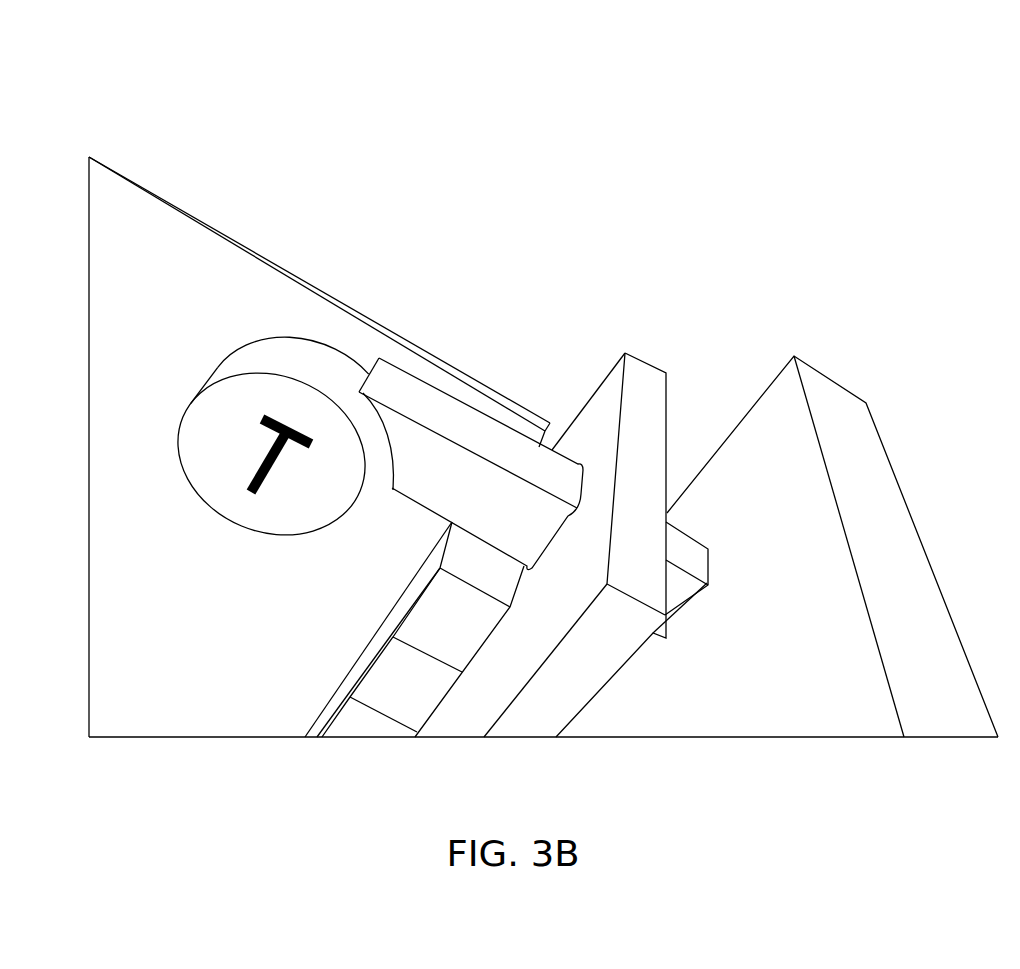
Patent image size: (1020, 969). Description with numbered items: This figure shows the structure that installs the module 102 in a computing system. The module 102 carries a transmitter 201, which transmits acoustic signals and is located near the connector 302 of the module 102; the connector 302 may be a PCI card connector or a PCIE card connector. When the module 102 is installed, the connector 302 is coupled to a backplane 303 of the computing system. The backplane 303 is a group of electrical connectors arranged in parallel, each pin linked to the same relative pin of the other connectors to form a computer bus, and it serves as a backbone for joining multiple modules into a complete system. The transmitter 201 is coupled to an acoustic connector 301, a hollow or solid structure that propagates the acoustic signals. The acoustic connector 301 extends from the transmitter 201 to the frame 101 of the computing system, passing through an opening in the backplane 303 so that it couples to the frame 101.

The module 102 is at (146, 189).
The transmitter 201 is at (302, 384).
The acoustic connector 301 is at (472, 408).
The connector 302 is at (447, 612).
The backplane 303 is at (647, 383).
The frame 101 is at (837, 400).